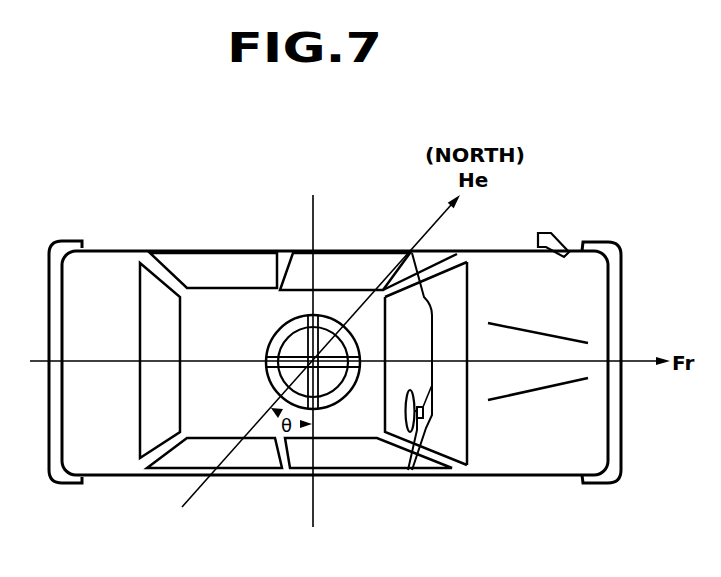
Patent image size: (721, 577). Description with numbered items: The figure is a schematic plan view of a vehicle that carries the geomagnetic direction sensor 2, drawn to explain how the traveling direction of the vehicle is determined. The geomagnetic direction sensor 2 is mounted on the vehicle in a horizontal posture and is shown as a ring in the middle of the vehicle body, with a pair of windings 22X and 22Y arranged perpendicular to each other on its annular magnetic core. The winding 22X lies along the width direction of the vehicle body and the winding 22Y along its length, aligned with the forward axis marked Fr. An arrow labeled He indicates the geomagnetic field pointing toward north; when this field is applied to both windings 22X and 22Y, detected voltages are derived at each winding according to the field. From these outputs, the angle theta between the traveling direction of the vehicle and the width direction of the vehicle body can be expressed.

The geomagnetic direction sensor 2 is at (344, 300).
The winding 22X is at (300, 350).
The winding 22Y is at (322, 383).